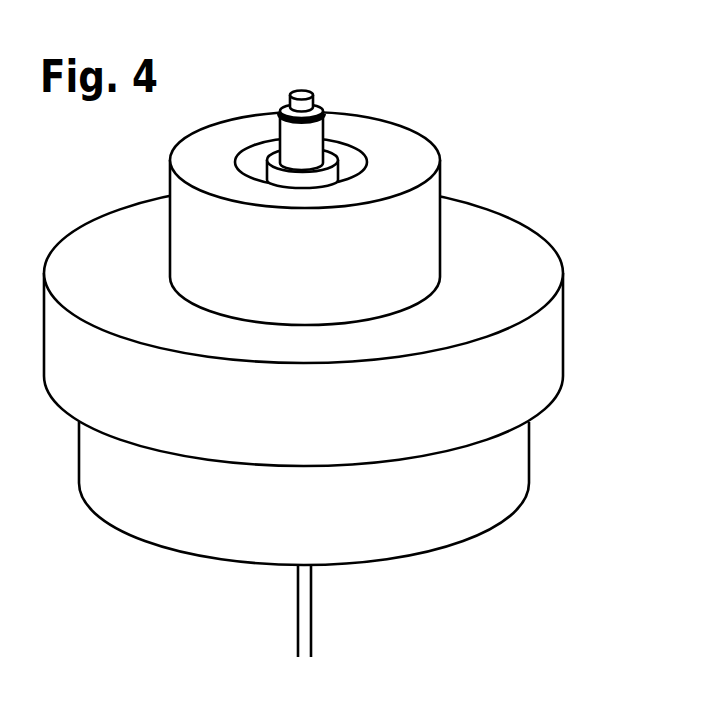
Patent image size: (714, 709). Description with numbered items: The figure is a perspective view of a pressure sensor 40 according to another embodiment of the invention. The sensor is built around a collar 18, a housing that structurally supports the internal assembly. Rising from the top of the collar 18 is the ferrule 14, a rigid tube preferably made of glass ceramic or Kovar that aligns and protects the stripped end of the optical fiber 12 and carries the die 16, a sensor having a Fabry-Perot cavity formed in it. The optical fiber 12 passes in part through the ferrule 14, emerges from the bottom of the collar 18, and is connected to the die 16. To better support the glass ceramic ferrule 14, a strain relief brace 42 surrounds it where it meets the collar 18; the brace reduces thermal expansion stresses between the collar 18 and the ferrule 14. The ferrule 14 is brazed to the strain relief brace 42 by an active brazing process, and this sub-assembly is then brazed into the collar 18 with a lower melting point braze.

The pressure sensor 40 is at (580, 141).
The collar 18 is at (563, 346).
The strain relief brace 42 is at (340, 167).
The ferrule 14 is at (295, 140).
The die 16 is at (315, 93).
The optical fiber 12 is at (311, 632).